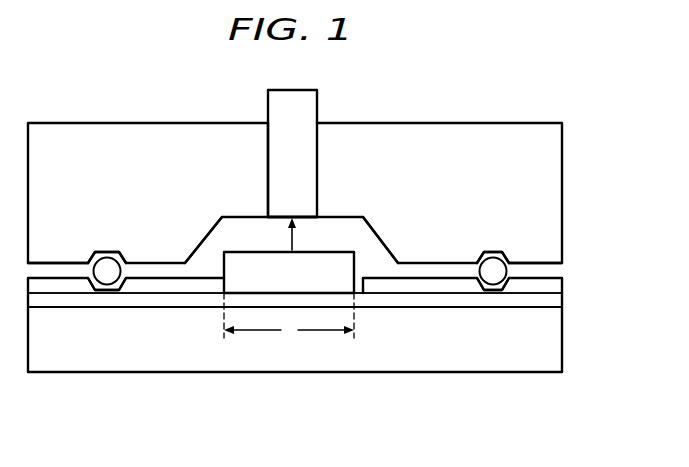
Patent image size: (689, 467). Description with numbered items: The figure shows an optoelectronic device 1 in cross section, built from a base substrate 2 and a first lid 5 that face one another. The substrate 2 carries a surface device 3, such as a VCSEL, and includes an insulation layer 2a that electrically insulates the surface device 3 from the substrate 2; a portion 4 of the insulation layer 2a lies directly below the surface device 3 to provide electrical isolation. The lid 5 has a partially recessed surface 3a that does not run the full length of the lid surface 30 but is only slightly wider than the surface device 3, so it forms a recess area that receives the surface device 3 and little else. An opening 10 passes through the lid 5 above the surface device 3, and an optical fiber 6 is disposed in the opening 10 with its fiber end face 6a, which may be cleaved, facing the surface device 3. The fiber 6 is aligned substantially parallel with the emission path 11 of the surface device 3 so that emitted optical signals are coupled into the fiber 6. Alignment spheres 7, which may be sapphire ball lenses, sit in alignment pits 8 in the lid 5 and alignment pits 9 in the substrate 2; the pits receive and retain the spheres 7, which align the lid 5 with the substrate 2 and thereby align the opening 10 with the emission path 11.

The optoelectronic device 1 is at (552, 99).
The base substrate 2 is at (563, 336).
The insulation layer 2a is at (248, 297).
The surface device 3 is at (333, 253).
The recessed surface 3a is at (208, 232).
The portion of the insulation layer 4 is at (289, 317).
The first lid 5 is at (563, 186).
The optical fiber 6 is at (312, 110).
The fiber end face 6a is at (307, 216).
The alignment spheres 7 is at (107, 270).
The alignment pit 8 is at (106, 251).
The alignment pit 9 is at (96, 288).
The opening 10 is at (262, 130).
The emission path 11 is at (290, 237).
The lid surface 30 is at (53, 262).